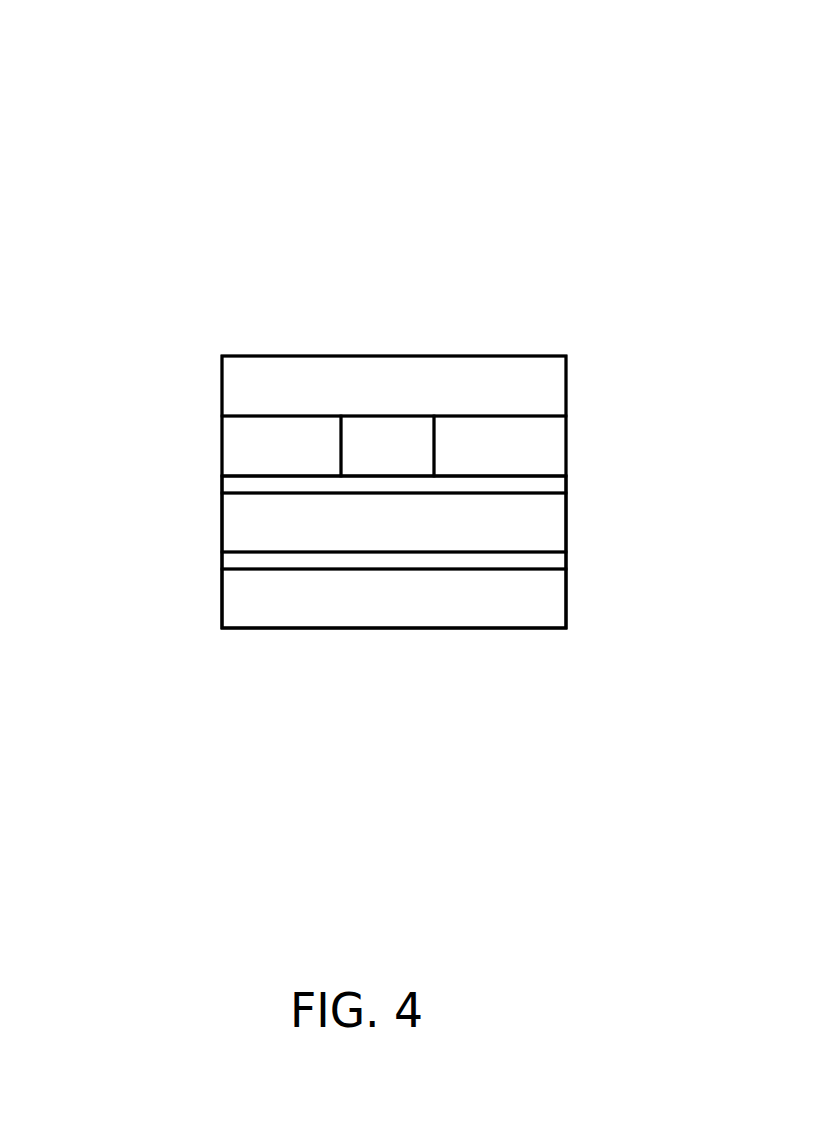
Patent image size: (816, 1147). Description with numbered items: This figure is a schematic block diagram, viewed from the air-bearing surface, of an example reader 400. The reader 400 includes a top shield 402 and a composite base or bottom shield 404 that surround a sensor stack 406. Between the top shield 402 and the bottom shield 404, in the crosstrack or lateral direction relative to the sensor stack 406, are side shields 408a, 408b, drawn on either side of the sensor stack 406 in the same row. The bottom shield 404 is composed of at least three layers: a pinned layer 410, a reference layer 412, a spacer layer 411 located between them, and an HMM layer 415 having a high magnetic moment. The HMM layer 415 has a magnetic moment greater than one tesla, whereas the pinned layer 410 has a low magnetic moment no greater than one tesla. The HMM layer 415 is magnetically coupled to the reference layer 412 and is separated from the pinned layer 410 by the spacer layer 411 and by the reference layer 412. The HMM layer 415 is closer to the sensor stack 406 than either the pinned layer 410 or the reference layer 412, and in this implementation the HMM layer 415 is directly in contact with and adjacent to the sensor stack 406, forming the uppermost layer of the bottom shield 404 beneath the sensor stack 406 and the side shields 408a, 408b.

The reader 400 is at (150, 112).
The top shield 402 is at (222, 388).
The bottom shield 404 is at (213, 475).
The sensor stack 406 is at (394, 416).
The side shield 408a is at (222, 453).
The side shield 408b is at (566, 443).
The pinned layer 410 is at (566, 602).
The spacer layer 411 is at (566, 563).
The reference layer 412 is at (566, 525).
The HMM layer 415 is at (566, 485).